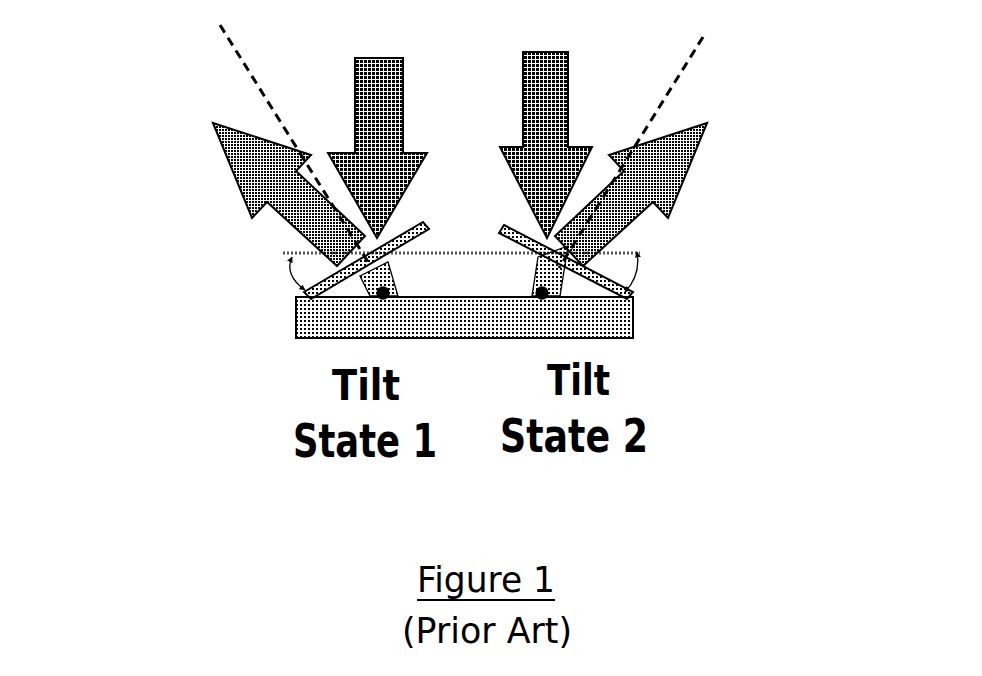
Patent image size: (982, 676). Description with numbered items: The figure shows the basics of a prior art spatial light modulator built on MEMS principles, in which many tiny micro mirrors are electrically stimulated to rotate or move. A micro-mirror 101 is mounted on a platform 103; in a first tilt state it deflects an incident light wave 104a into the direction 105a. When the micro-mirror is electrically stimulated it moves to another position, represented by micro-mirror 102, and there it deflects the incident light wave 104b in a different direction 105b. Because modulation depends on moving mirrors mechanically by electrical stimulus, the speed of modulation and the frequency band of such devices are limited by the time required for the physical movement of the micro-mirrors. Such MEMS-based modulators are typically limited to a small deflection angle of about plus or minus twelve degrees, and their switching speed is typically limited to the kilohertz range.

The micro-mirror 101 is at (318, 282).
The micro-mirror 102 is at (597, 275).
The platform 103 is at (324, 322).
The incident light wave 104a is at (377, 131).
The incident light wave 104b is at (546, 131).
The direction of deflected light 105a is at (260, 145).
The direction of deflected light 105b is at (659, 152).